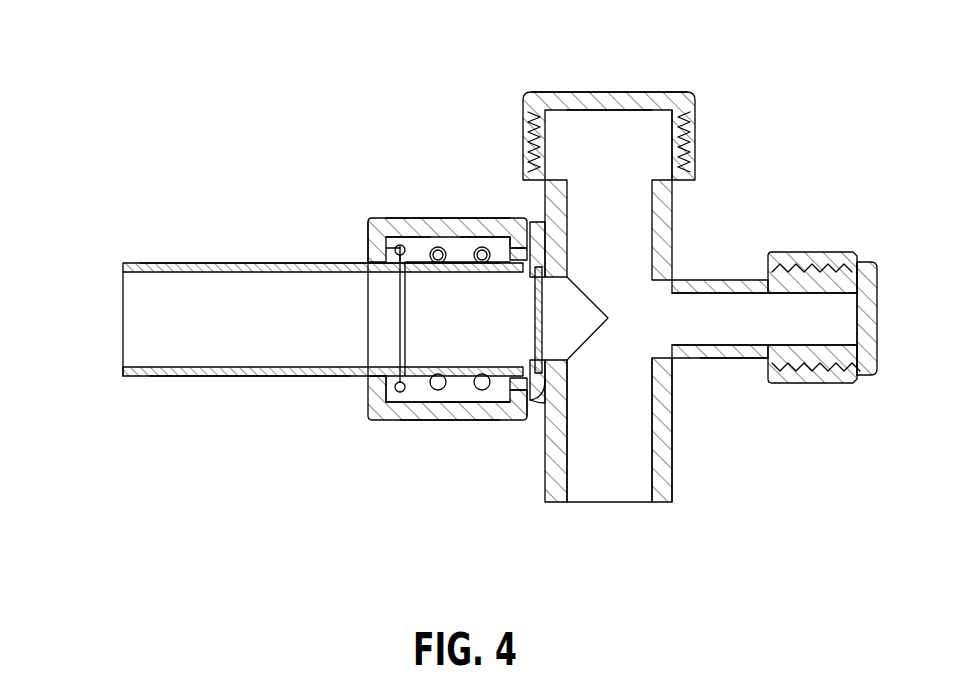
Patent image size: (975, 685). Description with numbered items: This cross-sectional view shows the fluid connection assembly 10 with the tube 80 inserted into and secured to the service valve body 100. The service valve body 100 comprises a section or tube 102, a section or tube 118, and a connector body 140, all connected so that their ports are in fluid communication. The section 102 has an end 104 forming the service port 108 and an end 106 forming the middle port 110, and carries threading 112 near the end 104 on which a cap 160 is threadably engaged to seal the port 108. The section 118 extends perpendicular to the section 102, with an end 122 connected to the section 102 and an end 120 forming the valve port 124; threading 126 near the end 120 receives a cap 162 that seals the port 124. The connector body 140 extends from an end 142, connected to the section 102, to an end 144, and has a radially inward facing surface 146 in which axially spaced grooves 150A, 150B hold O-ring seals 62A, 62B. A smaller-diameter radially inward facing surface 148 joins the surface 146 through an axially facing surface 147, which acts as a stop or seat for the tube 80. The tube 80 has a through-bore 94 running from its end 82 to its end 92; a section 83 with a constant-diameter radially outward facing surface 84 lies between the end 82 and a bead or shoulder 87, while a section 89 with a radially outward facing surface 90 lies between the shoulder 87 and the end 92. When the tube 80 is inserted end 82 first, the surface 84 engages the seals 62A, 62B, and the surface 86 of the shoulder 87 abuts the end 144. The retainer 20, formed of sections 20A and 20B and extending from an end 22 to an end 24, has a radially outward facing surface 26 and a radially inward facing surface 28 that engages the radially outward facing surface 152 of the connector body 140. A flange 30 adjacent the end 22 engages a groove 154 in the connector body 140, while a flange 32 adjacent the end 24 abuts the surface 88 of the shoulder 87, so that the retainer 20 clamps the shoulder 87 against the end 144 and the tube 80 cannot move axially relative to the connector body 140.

The fluid connection assembly 10 is at (118, 96).
The retainer 20 is at (404, 418).
The section of retainer 20A is at (378, 420).
The section of retainer 20B is at (368, 240).
The end of retainer 22 is at (538, 425).
The end of retainer 24 is at (372, 400).
The radially outward facing surface of retainer 26 is at (432, 420).
The radially inward facing surface of retainer 28 is at (462, 410).
The flange 30 is at (515, 398).
The flange 32 is at (382, 388).
The seal 62A is at (441, 375).
The seal 62B is at (484, 375).
The tube 80 is at (218, 262).
The end of tube 82 is at (542, 308).
The section of tube 83 is at (500, 395).
The radially outward facing surface 84 is at (515, 262).
The surface of shoulder 86 is at (440, 263).
The bead or shoulder 87 is at (406, 262).
The surface of shoulder 88 is at (400, 262).
The section of tube 89 is at (219, 395).
The radially outward facing surface 90 is at (188, 262).
The end of tube 92 is at (123, 376).
The through-bore 94 is at (146, 339).
The service valve body 100 is at (662, 218).
The section or tube 102 is at (666, 252).
The end of section 104 is at (665, 105).
The end of section 106 is at (698, 477).
The port 108 is at (614, 125).
The port 110 is at (614, 478).
The threading 112 is at (682, 145).
The section or tube 118 is at (745, 362).
The end of section 120 is at (864, 280).
The end of section 122 is at (693, 380).
The port 124 is at (838, 326).
The threading 126 is at (805, 270).
The connector body 140 is at (455, 242).
The end of connector body 142 is at (512, 235).
The end of connector body 144 is at (396, 246).
The radially inward facing surface 146 is at (400, 252).
The surface 147 is at (545, 385).
The radially inward facing surface 148 is at (570, 348).
The groove 150A is at (432, 250).
The groove 150B is at (480, 248).
The radially outward facing surface 152 is at (420, 238).
The groove 154 is at (500, 240).
The cap 160 is at (686, 122).
The cap 162 is at (866, 370).